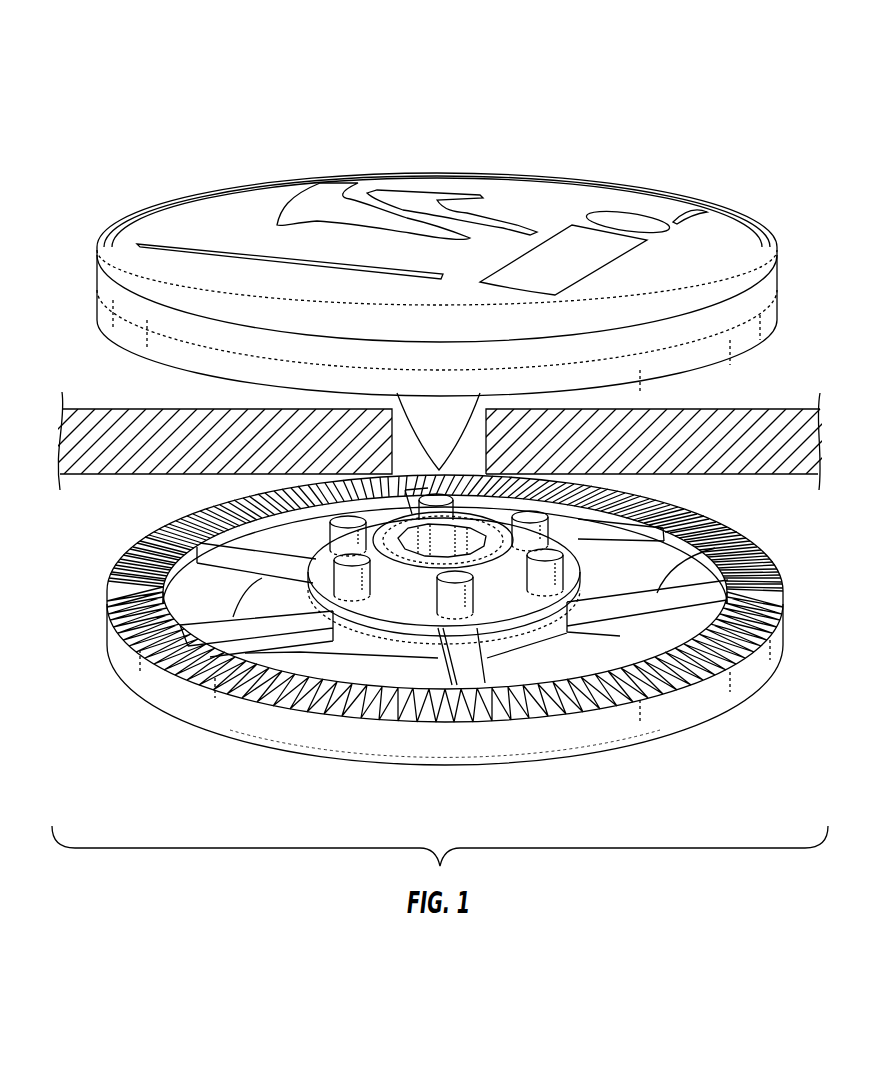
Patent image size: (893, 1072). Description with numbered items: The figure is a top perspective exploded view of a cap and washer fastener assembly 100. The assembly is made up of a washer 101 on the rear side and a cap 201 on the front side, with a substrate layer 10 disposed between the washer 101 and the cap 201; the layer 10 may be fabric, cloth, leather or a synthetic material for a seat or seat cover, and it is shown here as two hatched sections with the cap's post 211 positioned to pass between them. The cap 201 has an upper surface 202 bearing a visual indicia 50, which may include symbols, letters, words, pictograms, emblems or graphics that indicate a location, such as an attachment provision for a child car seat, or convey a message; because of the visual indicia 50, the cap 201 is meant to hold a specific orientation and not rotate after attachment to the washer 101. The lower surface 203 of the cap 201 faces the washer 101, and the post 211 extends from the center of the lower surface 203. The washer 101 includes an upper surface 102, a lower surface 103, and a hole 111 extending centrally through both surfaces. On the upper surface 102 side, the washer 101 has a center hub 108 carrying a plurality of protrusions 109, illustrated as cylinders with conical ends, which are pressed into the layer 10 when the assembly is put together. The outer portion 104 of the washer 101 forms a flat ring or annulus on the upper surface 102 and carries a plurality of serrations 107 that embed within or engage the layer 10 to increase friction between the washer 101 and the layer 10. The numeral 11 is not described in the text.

The cap and washer fastener assembly 100 is at (656, 62).
The cap 201 is at (720, 238).
The upper surface 202 is at (177, 240).
The visual indicia 50 is at (317, 200).
The lower surface 203 is at (140, 353).
The post 211 is at (450, 423).
The housing section 11 is at (407, 452).
The layer 10 is at (766, 434).
The hole 111 is at (273, 495).
The serrations 107 is at (130, 580).
The outer portion 104 is at (120, 613).
The washer 101 is at (653, 720).
The lower surface 103 is at (203, 720).
The upper surface 102 is at (657, 593).
The center hub 108 is at (400, 587).
The protrusions 109 is at (547, 570).